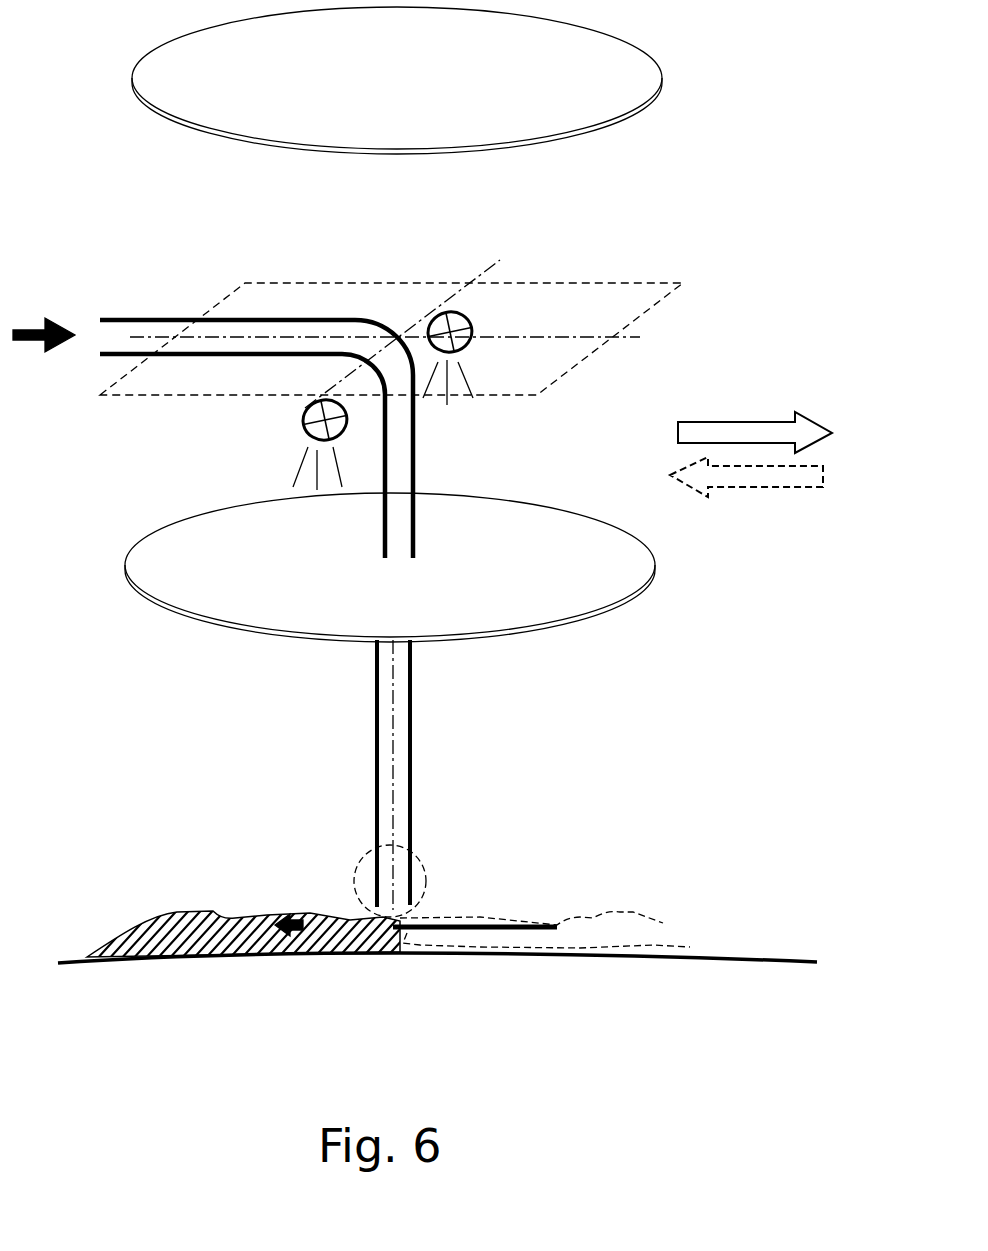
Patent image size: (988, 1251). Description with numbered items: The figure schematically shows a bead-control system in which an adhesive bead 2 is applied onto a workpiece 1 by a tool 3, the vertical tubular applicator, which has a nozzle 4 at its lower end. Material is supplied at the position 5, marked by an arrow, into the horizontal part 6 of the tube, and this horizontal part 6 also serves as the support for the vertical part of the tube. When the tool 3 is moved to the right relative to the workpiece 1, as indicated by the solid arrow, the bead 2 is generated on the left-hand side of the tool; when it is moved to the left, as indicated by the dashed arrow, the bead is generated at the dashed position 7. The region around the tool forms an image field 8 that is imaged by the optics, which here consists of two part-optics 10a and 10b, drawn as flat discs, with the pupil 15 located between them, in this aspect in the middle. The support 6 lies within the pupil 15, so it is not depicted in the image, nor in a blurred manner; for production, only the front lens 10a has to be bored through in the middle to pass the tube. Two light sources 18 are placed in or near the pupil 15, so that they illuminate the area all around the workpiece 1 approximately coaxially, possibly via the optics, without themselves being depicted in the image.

The workpiece 1 is at (108, 964).
The bead 2 is at (220, 954).
The tool 3 is at (418, 682).
The nozzle 4 is at (428, 868).
The material supply position 5 is at (85, 342).
The horizontal part of the tube 6 is at (230, 311).
The bead position 7 is at (588, 920).
The image field 8 is at (478, 932).
The front lens 10a is at (518, 639).
The part-optic 10b is at (495, 157).
The pupil 15 is at (509, 401).
The light sources 18 is at (301, 416).